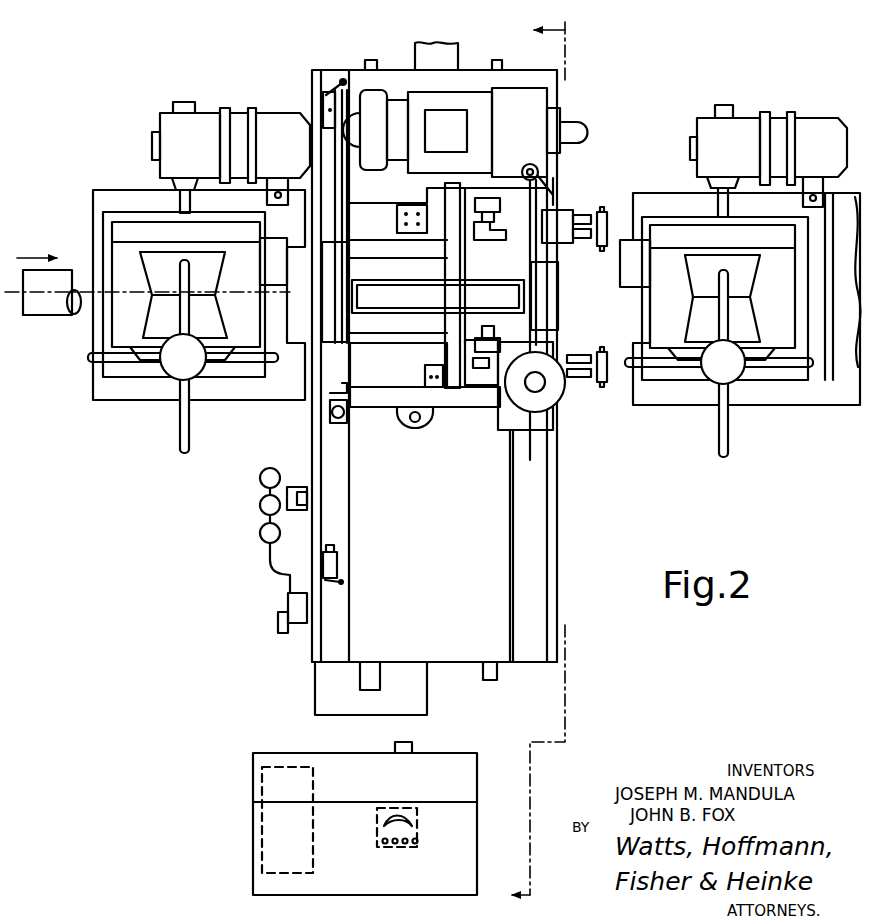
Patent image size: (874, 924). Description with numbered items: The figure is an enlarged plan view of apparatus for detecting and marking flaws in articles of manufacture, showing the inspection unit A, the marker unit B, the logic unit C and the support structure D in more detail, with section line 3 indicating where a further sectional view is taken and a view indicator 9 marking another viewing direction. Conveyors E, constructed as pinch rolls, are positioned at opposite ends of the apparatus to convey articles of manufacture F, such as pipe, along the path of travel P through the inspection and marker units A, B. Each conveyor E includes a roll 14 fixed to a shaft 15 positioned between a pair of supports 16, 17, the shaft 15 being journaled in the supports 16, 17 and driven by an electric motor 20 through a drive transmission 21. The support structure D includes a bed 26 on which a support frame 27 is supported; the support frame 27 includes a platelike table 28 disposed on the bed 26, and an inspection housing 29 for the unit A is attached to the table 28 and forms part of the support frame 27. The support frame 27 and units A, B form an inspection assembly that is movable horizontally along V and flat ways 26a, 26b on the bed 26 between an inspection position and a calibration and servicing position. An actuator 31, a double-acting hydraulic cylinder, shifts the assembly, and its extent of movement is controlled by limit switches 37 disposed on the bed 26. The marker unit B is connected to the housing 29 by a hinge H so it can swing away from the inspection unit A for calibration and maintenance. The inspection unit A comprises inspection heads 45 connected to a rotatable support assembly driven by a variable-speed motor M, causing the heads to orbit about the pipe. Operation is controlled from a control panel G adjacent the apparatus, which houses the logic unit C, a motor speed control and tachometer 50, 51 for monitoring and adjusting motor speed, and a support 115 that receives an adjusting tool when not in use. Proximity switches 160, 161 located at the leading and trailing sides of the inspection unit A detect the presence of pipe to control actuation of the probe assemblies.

The drive shaft / pulley assembly 9 is at (530, 162).
The roll 14 is at (152, 310).
The shaft 15 is at (188, 204).
The support 16 is at (140, 233).
The support 17 is at (170, 368).
The electric motor 20 is at (276, 112).
The drive transmission 21 is at (163, 122).
The bed 26 is at (462, 614).
The V way 26a is at (350, 640).
The flat way 26b is at (511, 642).
The support frame 27 is at (335, 405).
The table 28 is at (372, 408).
The inspection housing 29 is at (391, 376).
The actuator 31 is at (422, 50).
The limit switch 37 is at (330, 96).
The inspection head 45 is at (508, 234).
The motor speed control 50 is at (418, 846).
The tachometer 51 is at (415, 822).
The support 115 is at (414, 748).
The proximity switch 160 is at (284, 286).
The proximity switch 161 is at (630, 260).
The section line 3- 3 is at (523, 465).
The inspection unit A is at (399, 408).
The marker unit B is at (500, 440).
The logic unit C is at (272, 828).
The support structure D is at (562, 492).
The conveyor E is at (140, 178).
The article of manufacture F is at (55, 314).
The control panel G is at (470, 840).
The hinge H is at (412, 430).
The motor M is at (545, 105).
The path of travel P is at (92, 292).